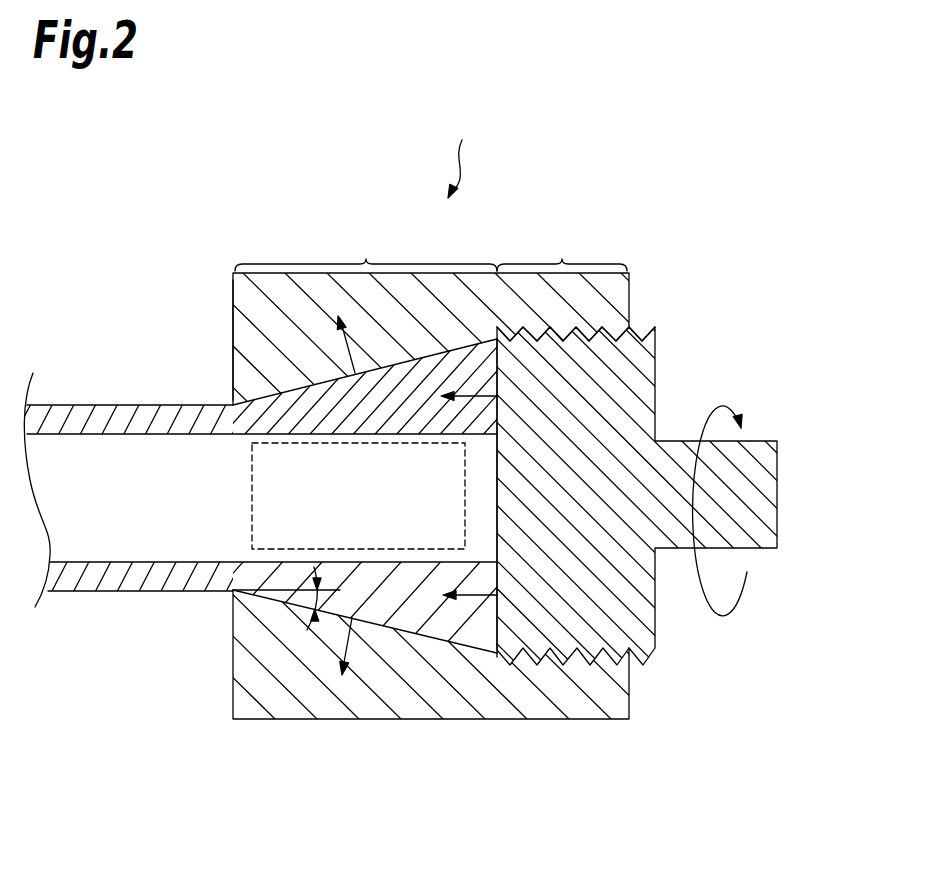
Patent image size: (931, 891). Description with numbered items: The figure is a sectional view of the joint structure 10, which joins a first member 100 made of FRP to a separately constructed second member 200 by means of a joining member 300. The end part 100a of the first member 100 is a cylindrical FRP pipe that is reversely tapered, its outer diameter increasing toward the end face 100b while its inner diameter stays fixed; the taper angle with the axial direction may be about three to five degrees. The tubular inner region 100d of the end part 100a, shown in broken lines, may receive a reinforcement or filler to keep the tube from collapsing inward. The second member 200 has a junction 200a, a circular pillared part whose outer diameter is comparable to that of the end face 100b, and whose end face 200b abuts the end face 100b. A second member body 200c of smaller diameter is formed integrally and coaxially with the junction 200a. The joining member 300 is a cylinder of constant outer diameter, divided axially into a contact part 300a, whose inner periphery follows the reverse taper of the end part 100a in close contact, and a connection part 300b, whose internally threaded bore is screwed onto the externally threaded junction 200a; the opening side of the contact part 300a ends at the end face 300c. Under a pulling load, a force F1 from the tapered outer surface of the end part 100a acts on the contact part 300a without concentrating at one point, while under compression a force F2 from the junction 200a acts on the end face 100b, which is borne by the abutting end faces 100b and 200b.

The joint structure 10 is at (464, 157).
The first member 100 is at (138, 398).
The end part 100a is at (398, 617).
The end face 100b is at (500, 602).
The tubular inner region 100d is at (252, 536).
The second member 200 is at (660, 373).
The junction 200a is at (655, 338).
The end face 200b is at (487, 635).
The second member body 200c is at (757, 458).
The joining member 300 is at (228, 288).
The contact part 300a is at (366, 253).
The connection part 300b is at (562, 253).
The end face 300c is at (232, 325).
The force F1 is at (345, 347).
The force F2 is at (497, 583).